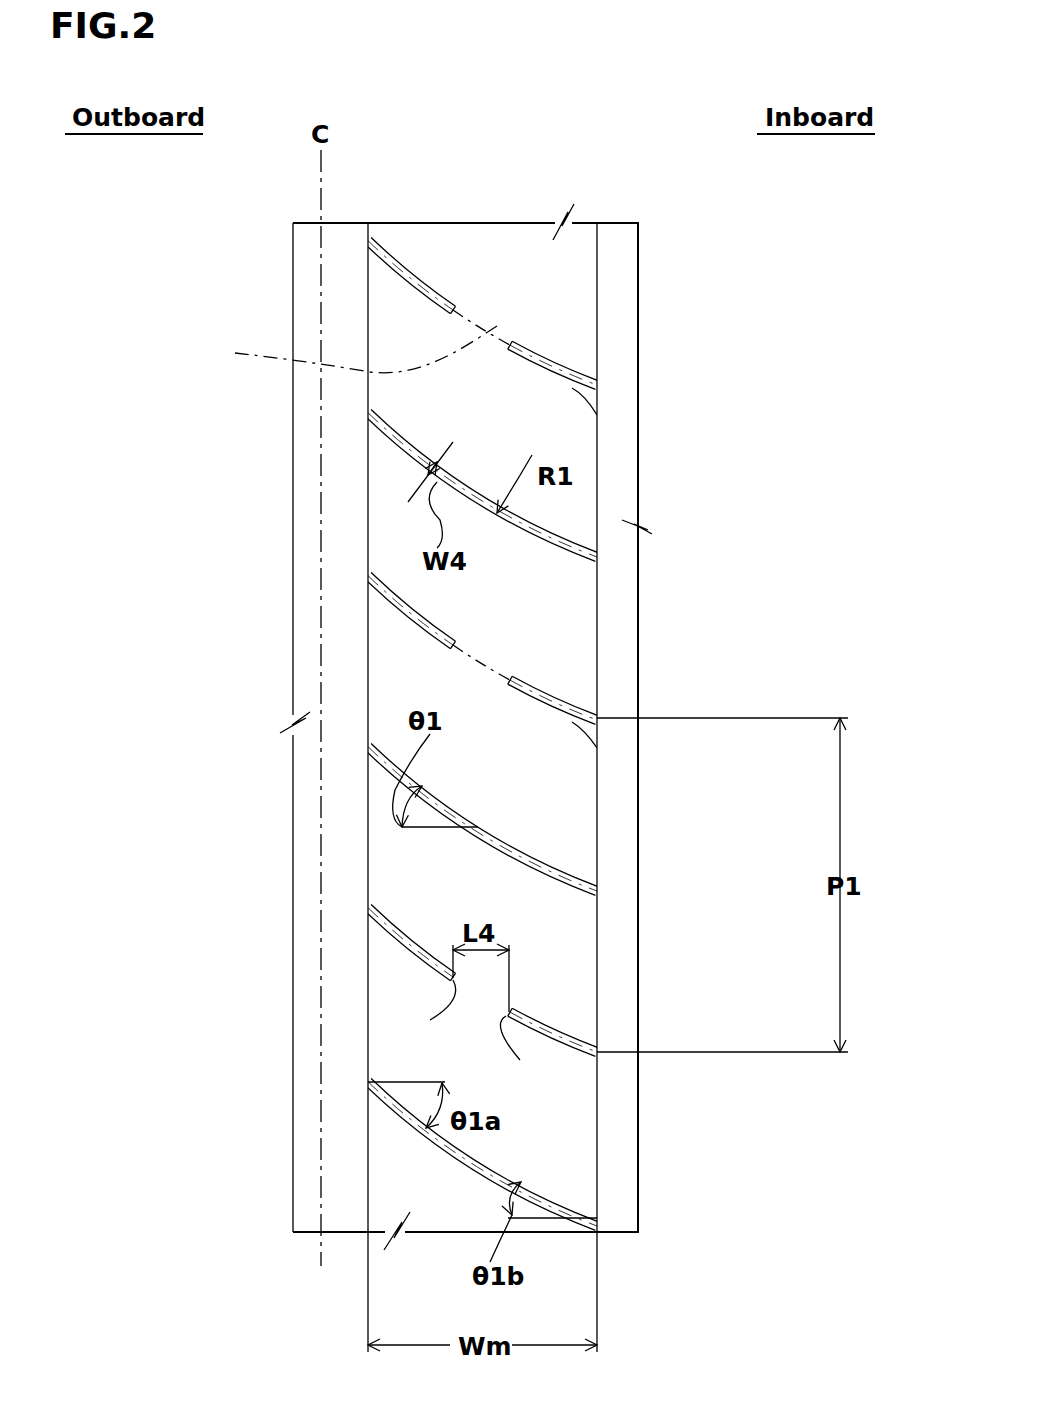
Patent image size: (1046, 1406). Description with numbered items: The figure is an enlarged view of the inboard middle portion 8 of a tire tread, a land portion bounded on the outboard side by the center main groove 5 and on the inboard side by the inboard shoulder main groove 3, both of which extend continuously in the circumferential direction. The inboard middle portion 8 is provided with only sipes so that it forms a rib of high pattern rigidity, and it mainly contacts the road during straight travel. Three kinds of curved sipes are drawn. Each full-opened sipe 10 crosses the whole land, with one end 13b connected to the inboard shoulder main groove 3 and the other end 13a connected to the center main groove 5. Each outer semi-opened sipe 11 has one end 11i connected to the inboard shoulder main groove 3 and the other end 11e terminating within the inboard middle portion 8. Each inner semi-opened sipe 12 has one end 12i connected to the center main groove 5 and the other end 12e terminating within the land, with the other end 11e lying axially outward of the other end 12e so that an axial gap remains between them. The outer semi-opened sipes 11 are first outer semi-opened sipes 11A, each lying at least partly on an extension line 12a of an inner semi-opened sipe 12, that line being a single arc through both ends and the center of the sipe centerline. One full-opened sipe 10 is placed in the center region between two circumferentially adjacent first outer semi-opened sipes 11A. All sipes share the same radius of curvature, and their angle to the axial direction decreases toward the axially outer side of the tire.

The inboard shoulder main groove 3 is at (616, 255).
The center main groove 5 is at (344, 262).
The inboard middle portion 8 is at (516, 270).
The full-opened sipe 10 is at (558, 545).
The outer semi-opened sipe 11 is at (562, 372).
The first outer semi-opened sipe 11A is at (545, 692).
The one end of the outer semi-opened sipe 11i is at (597, 1052).
The other end of the outer semi-opened sipe 11e is at (520, 1060).
The inner semi-opened sipe 12 is at (410, 277).
The extension line 12a is at (337, 349).
The one end of the inner semi-opened sipe 12i is at (390, 905).
The other end of the inner semi-opened sipe 12e is at (430, 1020).
The other end of the full-opened sipe 13a is at (372, 1078).
The one end of the full-opened sipe 13b is at (597, 1222).